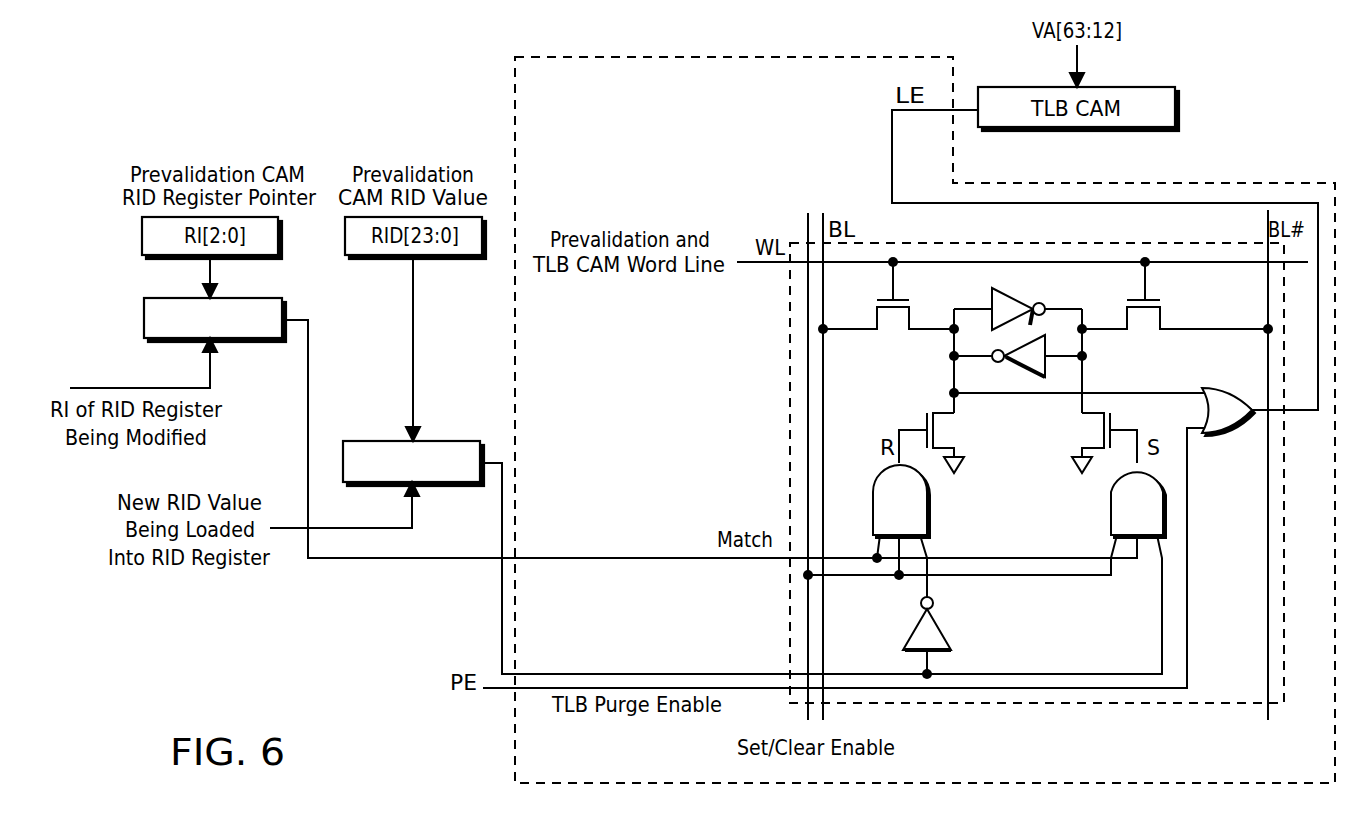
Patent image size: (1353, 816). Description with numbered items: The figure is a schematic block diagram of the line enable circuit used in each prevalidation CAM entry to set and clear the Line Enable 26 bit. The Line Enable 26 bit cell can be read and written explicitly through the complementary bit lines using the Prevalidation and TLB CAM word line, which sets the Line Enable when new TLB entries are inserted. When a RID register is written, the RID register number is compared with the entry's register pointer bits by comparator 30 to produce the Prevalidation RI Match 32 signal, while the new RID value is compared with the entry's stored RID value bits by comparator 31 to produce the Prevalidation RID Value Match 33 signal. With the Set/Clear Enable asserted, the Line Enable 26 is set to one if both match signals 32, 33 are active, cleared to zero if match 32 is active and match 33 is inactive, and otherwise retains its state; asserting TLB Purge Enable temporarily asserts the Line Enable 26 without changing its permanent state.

The line enable bit 26 is at (925, 420).
The comparator 30 is at (215, 320).
The comparator 31 is at (413, 463).
The prevalidation RI match signal 32 is at (709, 439).
The prevalidation RID value match signal 33 is at (821, 568).